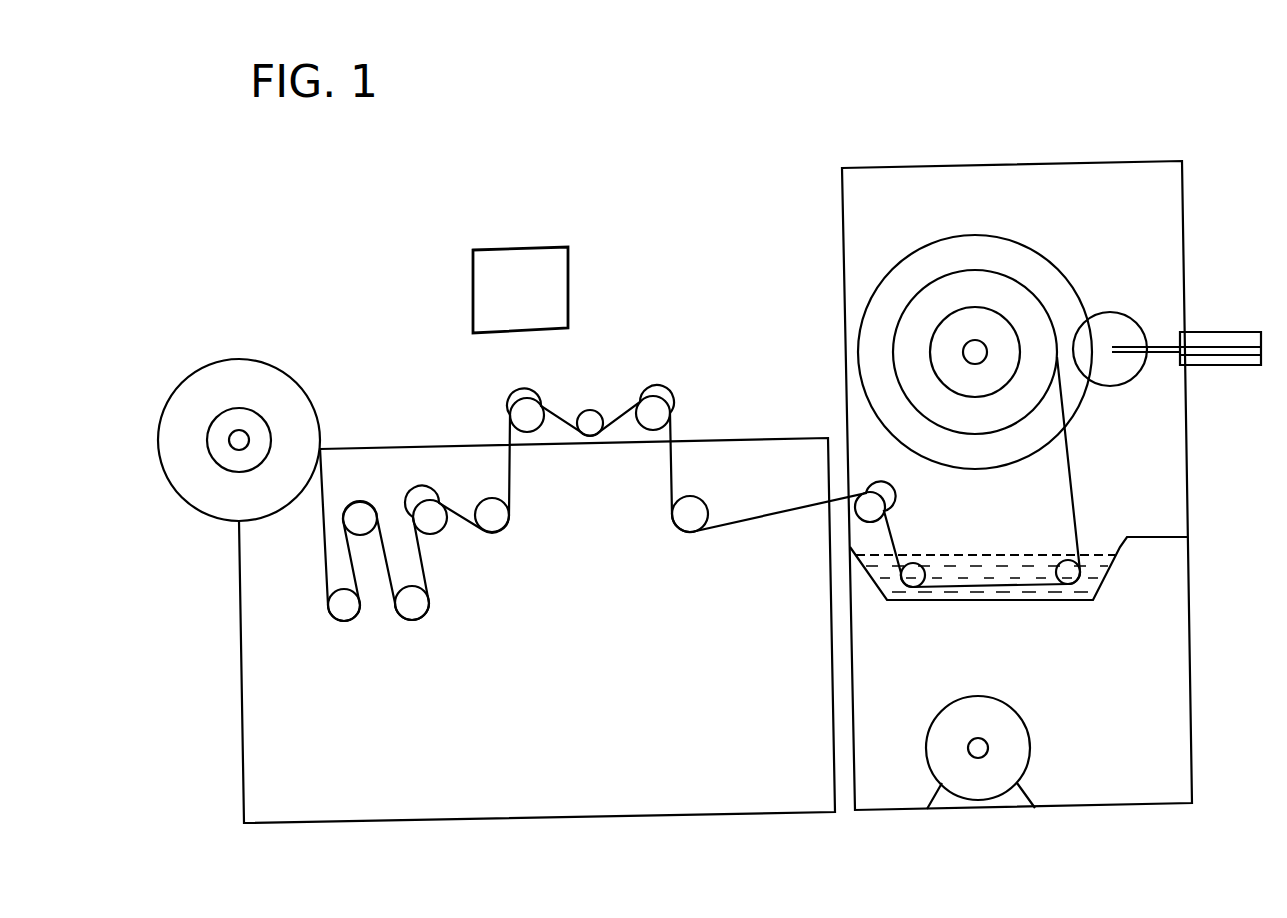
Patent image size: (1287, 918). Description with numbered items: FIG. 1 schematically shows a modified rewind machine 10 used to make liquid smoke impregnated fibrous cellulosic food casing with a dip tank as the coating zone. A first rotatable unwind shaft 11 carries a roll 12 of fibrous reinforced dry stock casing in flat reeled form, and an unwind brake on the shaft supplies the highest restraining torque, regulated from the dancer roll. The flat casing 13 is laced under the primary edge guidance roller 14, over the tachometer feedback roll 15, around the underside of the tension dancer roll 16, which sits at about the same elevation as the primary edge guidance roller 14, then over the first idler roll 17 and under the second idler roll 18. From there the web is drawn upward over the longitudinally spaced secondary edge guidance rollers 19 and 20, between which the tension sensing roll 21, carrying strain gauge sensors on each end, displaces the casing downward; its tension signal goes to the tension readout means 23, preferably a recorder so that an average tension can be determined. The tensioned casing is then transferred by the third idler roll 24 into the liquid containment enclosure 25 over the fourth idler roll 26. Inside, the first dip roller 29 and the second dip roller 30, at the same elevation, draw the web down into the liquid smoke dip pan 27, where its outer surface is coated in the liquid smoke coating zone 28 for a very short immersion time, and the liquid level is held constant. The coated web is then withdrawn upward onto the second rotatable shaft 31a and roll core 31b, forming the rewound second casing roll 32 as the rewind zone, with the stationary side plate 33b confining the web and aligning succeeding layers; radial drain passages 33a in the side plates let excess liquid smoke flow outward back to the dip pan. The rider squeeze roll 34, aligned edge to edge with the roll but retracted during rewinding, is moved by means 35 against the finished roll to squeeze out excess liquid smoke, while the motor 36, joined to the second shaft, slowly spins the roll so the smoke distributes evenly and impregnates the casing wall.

The modified rewind machine 10 is at (516, 706).
The first rotatable unwind shaft 11 is at (236, 437).
The roll of fibrous reinforced dry stock cellulose food casing 12 is at (279, 384).
The flat casing 13 is at (322, 489).
The primary edge guidance roller 14 is at (343, 610).
The tachometer feedback roll 15 is at (363, 512).
The tension dancer roll 16 is at (418, 607).
The first idler roll 17 is at (442, 512).
The second idler roll 18 is at (500, 517).
The secondary edge guidance roller 19 is at (510, 415).
The secondary edge guidance roller 20 is at (670, 413).
The tension sensing roll 21 is at (587, 422).
The tension readout means 23 is at (568, 305).
The third idler roll 24 is at (700, 505).
The liquid containment enclosure 25 is at (1072, 161).
The fourth idler roll 26 is at (875, 505).
The liquid smoke dip pan 27 is at (958, 602).
The liquid smoke coating zone 28 is at (1017, 578).
The first dip roller 29 is at (913, 580).
The second dip roller 30 is at (1068, 580).
The second rotatable shaft 31a is at (983, 345).
The roll core 31b is at (1015, 330).
The rewound second casing roll 32 is at (903, 352).
The radial drain passages 33a is at (922, 288).
The stationary side plate 33b is at (968, 235).
The rider squeeze roll 34 is at (1120, 313).
The moving means 35 is at (1212, 333).
The motor 36 is at (1008, 720).